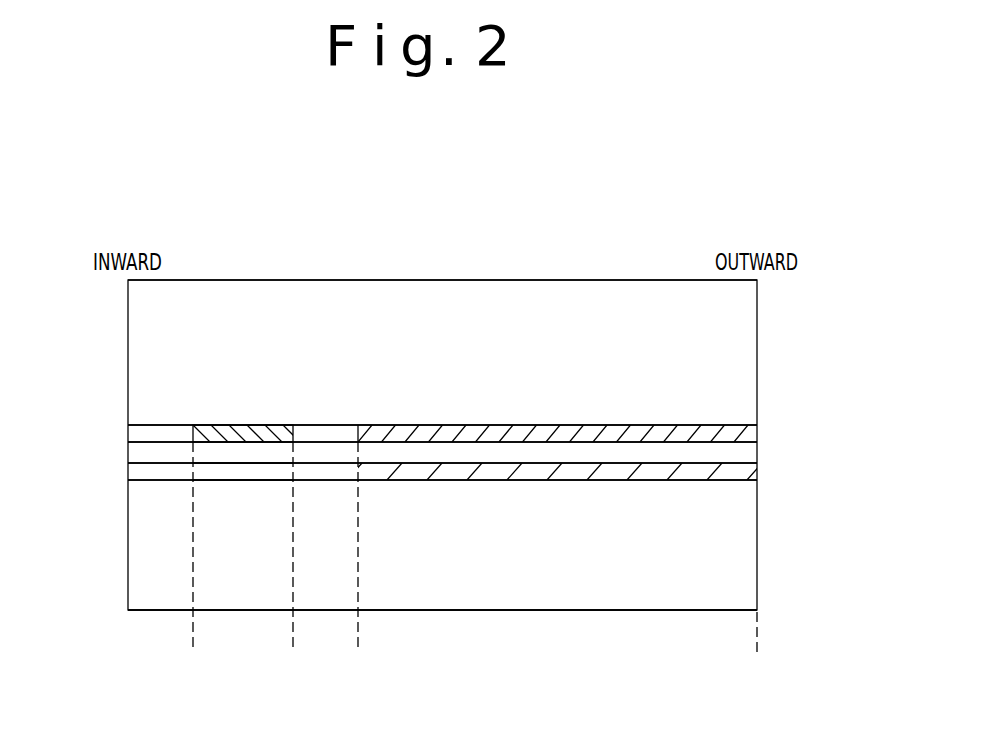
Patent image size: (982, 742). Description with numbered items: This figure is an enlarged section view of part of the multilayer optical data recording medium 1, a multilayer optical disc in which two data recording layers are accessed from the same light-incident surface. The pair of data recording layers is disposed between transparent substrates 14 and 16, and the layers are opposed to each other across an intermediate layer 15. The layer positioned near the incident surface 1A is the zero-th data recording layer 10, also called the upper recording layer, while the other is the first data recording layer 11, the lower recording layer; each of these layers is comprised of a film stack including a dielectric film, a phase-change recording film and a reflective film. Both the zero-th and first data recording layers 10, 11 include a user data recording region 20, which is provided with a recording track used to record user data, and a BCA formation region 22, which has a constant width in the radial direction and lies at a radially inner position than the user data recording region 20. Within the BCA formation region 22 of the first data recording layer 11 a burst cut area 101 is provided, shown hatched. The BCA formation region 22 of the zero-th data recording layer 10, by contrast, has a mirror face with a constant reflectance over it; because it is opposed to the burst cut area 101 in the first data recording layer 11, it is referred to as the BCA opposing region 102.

The multilayer optical data recording medium 1 is at (534, 250).
The incident surface 1A is at (315, 611).
The zero-th data recording layer 10 is at (401, 512).
The first data recording layer 11 is at (406, 395).
The transparent substrate 14 is at (757, 546).
The intermediate layer 15 is at (757, 453).
The transparent substrate 16 is at (757, 361).
The user data recording region 20 is at (757, 652).
The BCA formation region 22 is at (293, 652).
The burst cut area 101 is at (232, 425).
The BCA opposing region 102 is at (233, 480).